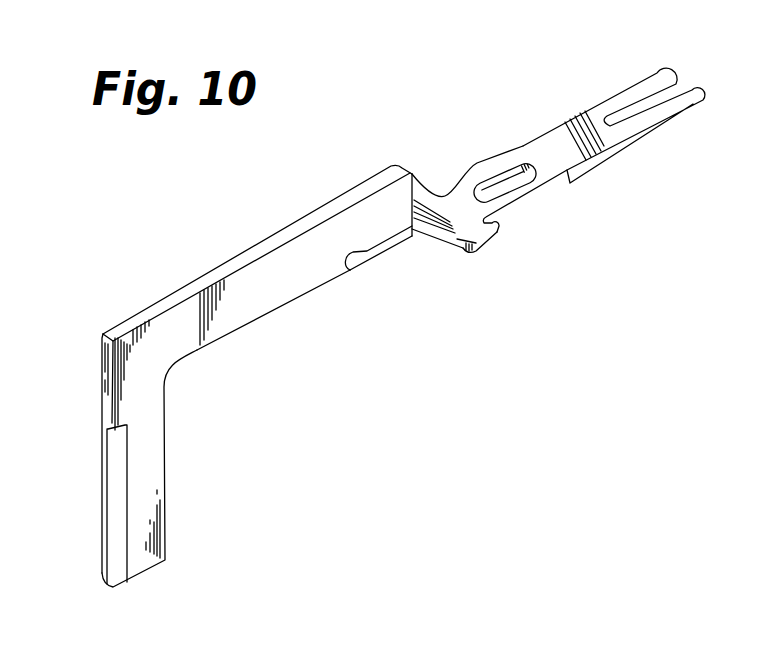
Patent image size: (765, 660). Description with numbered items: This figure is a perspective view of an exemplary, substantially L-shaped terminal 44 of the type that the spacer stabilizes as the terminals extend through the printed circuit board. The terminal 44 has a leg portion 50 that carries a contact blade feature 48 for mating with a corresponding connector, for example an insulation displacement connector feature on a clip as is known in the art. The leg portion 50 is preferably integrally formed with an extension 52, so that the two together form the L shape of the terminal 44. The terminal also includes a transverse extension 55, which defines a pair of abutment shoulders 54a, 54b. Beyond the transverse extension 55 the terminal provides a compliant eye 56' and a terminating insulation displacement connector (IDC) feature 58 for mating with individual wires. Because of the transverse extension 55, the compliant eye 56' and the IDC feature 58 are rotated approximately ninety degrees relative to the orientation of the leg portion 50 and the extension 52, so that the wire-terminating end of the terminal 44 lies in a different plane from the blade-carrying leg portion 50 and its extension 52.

The terminal 44 is at (372, 300).
The contact blade feature 48 is at (113, 516).
The leg portion 50 is at (133, 460).
The extension 52 is at (251, 250).
The abutment shoulder 54a is at (447, 194).
The abutment shoulder 54b is at (498, 226).
The transverse extension 55 is at (450, 226).
The compliant eye 56' is at (559, 186).
The insulation displacement connector (IDC) feature 58 is at (654, 72).